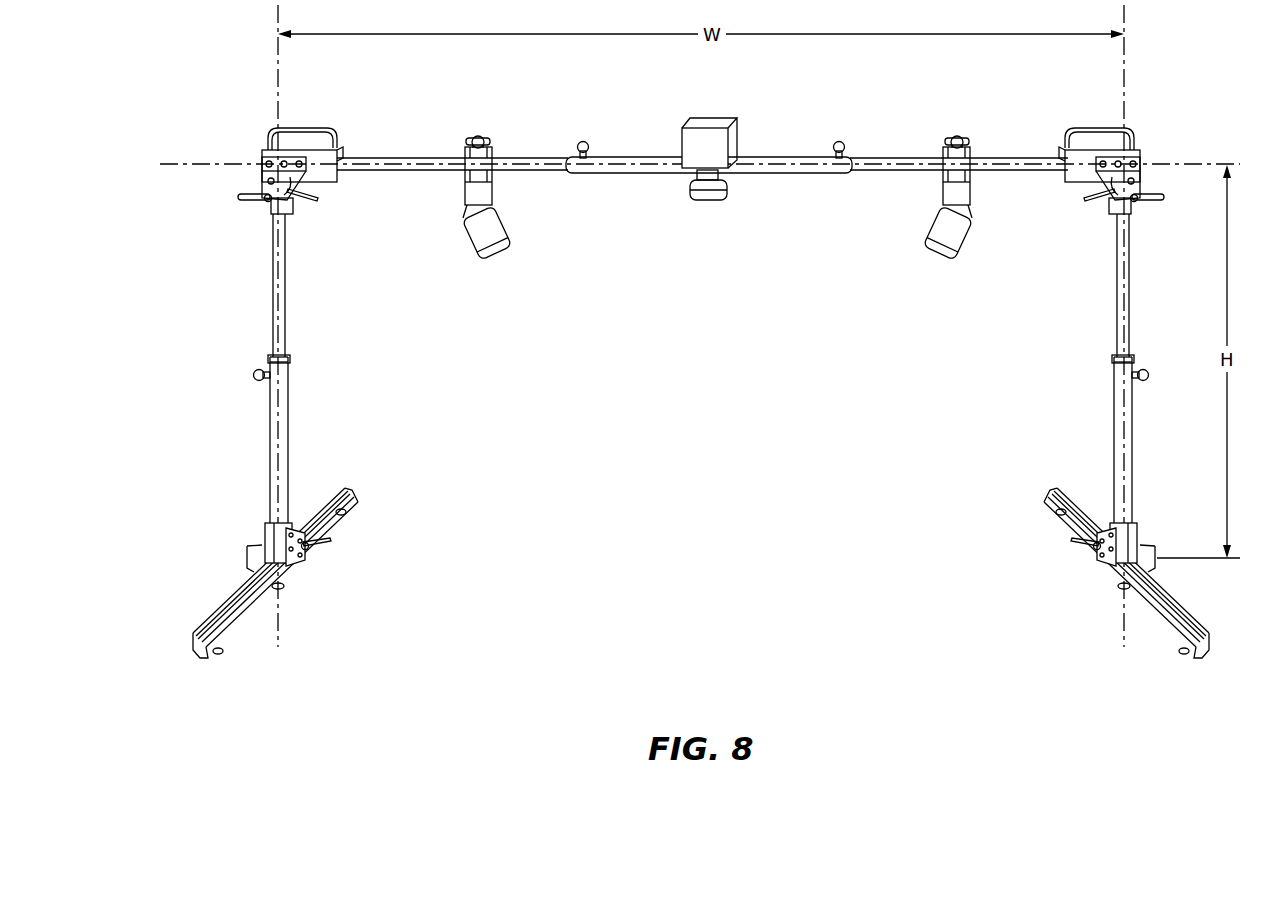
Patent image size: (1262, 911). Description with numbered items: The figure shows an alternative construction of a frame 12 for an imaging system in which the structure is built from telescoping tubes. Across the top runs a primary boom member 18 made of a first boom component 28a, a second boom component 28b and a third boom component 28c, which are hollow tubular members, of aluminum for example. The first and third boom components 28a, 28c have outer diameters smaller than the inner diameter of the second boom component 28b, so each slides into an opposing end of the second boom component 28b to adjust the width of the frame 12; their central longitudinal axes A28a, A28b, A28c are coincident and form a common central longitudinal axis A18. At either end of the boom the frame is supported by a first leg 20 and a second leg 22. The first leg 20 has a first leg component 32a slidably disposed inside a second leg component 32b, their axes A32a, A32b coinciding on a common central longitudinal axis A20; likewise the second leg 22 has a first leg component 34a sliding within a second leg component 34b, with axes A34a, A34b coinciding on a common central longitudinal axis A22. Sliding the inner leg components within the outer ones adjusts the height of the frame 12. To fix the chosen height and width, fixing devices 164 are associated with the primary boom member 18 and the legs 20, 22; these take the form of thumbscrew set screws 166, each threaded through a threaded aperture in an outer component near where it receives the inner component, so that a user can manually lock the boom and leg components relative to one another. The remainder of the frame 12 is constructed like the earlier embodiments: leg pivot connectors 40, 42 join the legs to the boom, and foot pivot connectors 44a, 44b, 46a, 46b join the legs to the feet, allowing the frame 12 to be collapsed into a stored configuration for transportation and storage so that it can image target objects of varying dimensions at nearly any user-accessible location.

The frame 12 is at (282, 373).
The primary boom member 18 is at (702, 171).
The first leg 20 is at (1133, 355).
The second leg 22 is at (269, 355).
The first boom component 28a is at (1043, 157).
The second boom component 28b is at (753, 156).
The third boom component 28c is at (393, 157).
The first leg component 32a is at (1116, 297).
The second leg component 32b is at (1115, 420).
The first leg component 34a is at (287, 297).
The second leg component 34b is at (289, 420).
The leg pivot connector 40 is at (1139, 164).
The leg pivot connector 42 is at (262, 160).
The foot pivot connector 44a is at (1139, 552).
The foot pivot connector 44b is at (1105, 565).
The foot pivot connector 46a is at (263, 556).
The foot pivot connector 46b is at (297, 563).
The fixing device 164 is at (704, 245).
The thumbscrew set screw 166 is at (583, 141).
The central longitudinal axis A28a is at (652, 203).
The central longitudinal axis A28b is at (652, 203).
The central longitudinal axis A28c is at (652, 203).
The common central longitudinal axis A18 is at (222, 168).
The central longitudinal axis A34a is at (378, 326).
The central longitudinal axis A34b is at (378, 326).
The common central longitudinal axis A22 is at (285, 605).
The central longitudinal axis A32a is at (1026, 326).
The central longitudinal axis A32b is at (1026, 326).
The common central longitudinal axis A20 is at (1120, 605).